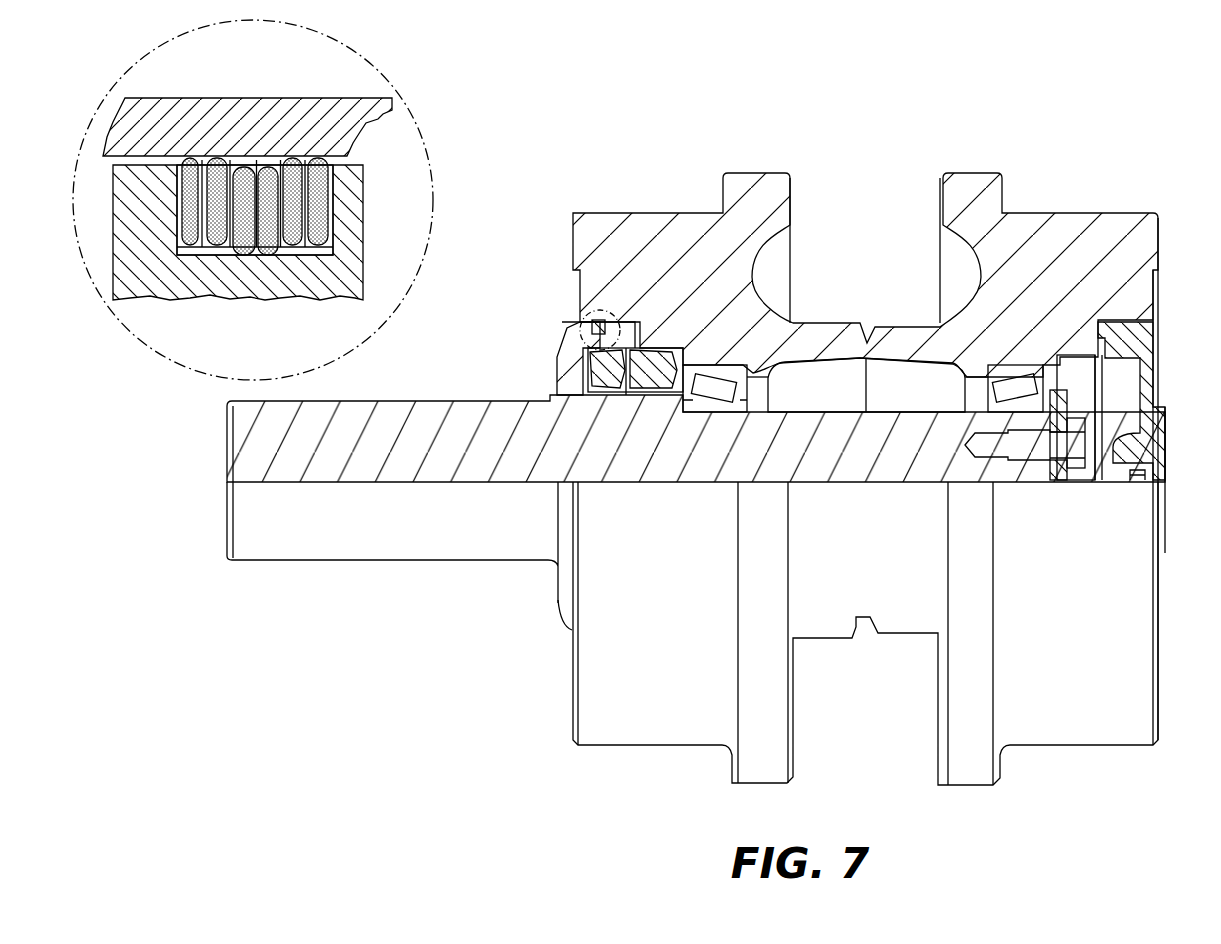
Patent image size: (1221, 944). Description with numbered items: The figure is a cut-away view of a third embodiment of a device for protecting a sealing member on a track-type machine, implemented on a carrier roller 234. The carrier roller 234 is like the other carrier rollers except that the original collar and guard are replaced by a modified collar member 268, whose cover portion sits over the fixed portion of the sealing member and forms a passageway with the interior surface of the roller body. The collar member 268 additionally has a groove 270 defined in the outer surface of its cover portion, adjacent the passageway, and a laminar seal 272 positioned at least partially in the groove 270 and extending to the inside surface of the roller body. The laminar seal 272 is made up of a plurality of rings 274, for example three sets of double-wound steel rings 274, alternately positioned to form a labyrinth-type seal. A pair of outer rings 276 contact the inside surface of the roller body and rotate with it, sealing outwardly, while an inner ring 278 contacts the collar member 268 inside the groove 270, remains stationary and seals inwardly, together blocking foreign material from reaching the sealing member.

The carrier roller 234 is at (812, 186).
The collar member 268 is at (557, 376).
The groove 270 is at (218, 250).
The laminar seal 272 is at (250, 167).
The rings 274 is at (185, 252).
The outer rings 276 is at (188, 158).
The inner ring 278 is at (258, 250).